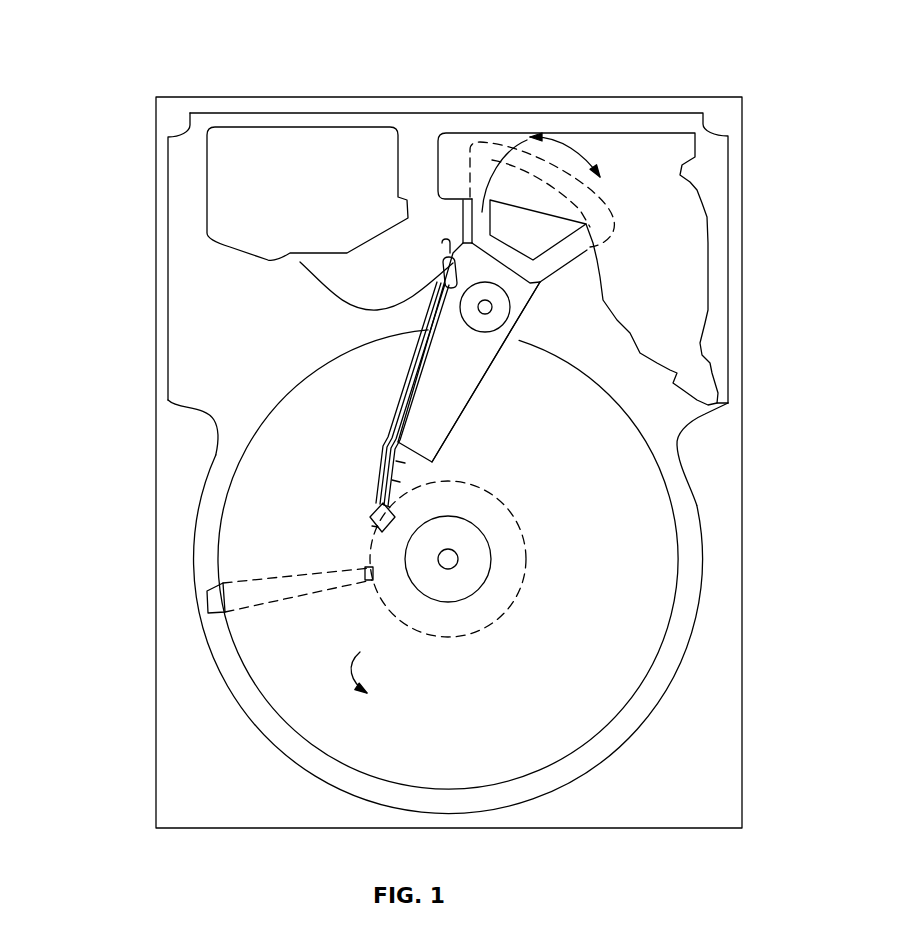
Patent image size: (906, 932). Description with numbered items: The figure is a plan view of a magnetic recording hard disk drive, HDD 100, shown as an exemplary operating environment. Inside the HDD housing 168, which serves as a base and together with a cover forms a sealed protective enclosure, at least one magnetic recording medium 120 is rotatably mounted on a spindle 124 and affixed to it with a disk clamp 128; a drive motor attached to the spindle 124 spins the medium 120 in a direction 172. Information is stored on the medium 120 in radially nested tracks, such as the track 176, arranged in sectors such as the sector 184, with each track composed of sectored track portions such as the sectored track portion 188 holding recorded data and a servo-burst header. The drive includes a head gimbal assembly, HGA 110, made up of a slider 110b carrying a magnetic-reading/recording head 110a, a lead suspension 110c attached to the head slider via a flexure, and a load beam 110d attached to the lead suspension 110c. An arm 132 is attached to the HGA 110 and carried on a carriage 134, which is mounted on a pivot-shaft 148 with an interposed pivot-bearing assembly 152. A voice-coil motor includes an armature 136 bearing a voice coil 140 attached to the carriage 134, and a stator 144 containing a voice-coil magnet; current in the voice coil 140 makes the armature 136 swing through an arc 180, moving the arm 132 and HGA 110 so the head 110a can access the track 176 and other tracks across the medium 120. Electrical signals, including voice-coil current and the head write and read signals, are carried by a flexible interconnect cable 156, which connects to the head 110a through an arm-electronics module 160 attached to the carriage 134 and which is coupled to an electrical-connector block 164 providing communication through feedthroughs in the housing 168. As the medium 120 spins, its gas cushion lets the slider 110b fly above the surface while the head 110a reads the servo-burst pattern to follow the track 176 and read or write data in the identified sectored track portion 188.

The hard disk drive 100 is at (108, 30).
The head gimbal assembly 110 is at (80, 345).
The magnetic-reading/recording head 110a is at (378, 527).
The slider 110b is at (390, 507).
The lead suspension 110c is at (400, 482).
The load beam 110d is at (405, 462).
The magnetic recording medium 120 is at (617, 513).
The spindle 124 is at (455, 562).
The disk clamp 128 is at (460, 590).
The arm 132 is at (437, 417).
The carriage 134 is at (507, 337).
The armature 136 is at (465, 200).
The voice coil 140 is at (530, 137).
The stator 144 is at (680, 220).
The pivot-shaft 148 is at (485, 310).
The pivot-bearing assembly 152 is at (500, 315).
The flexible interconnect cable 156 is at (300, 262).
The arm-electronics module 160 is at (445, 281).
The electrical-connector block 164 is at (227, 185).
The HDD housing 168 is at (742, 99).
The direction 172 is at (380, 667).
The track 176 is at (522, 533).
The arc 180 is at (563, 165).
The sector 184 is at (205, 602).
The sectored track portion 188 is at (348, 569).